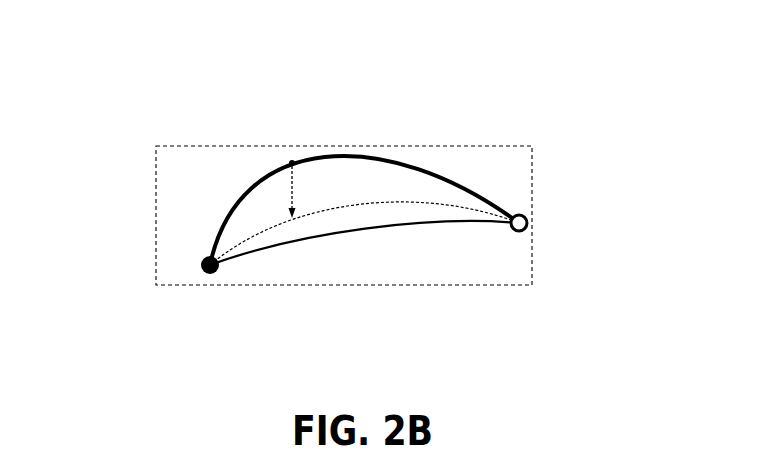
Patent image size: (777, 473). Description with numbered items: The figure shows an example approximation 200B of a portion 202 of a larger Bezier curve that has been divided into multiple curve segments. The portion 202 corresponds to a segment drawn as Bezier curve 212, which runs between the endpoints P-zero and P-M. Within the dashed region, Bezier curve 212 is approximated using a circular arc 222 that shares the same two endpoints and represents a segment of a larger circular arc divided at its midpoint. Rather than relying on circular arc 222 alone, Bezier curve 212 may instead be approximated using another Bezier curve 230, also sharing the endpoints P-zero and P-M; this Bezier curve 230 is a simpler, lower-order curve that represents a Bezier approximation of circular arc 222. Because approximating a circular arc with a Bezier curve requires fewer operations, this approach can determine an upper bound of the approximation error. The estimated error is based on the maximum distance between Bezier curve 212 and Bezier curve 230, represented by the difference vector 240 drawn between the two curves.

The approximation 200B is at (630, 58).
The portion 202 is at (156, 183).
The Bezier curve 212 is at (430, 166).
The circular arc 222 is at (279, 254).
The Bezier curve 230 is at (403, 209).
The difference vector 240 is at (286, 180).